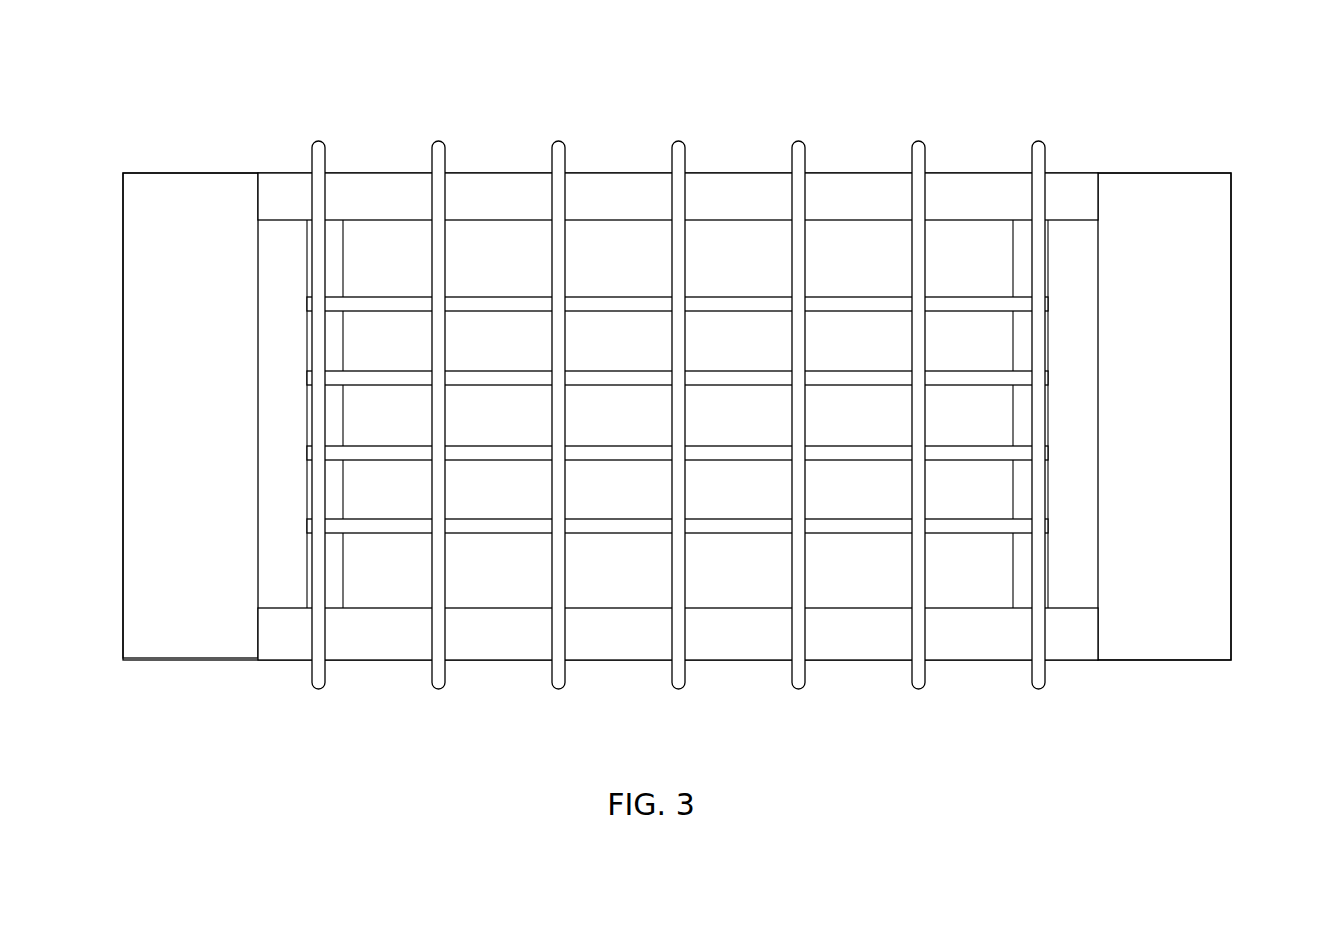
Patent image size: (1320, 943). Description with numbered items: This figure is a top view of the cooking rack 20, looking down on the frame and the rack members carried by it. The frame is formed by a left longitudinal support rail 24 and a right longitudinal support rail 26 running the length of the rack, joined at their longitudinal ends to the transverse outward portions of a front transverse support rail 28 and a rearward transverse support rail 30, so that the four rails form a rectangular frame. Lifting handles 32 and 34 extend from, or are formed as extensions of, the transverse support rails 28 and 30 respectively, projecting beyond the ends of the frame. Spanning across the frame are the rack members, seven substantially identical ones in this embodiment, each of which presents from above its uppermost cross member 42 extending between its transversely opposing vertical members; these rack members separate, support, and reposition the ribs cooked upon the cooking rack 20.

The cooking rack 20 is at (1178, 114).
The left longitudinal support rail 24 is at (975, 660).
The right longitudinal support rail 26 is at (980, 175).
The front transverse support rail 28 is at (1045, 565).
The rearward transverse support rail 30 is at (332, 578).
The lifting handle 32 is at (1205, 477).
The lifting handle 34 is at (152, 428).
The uppermost cross member 42 is at (1037, 183).